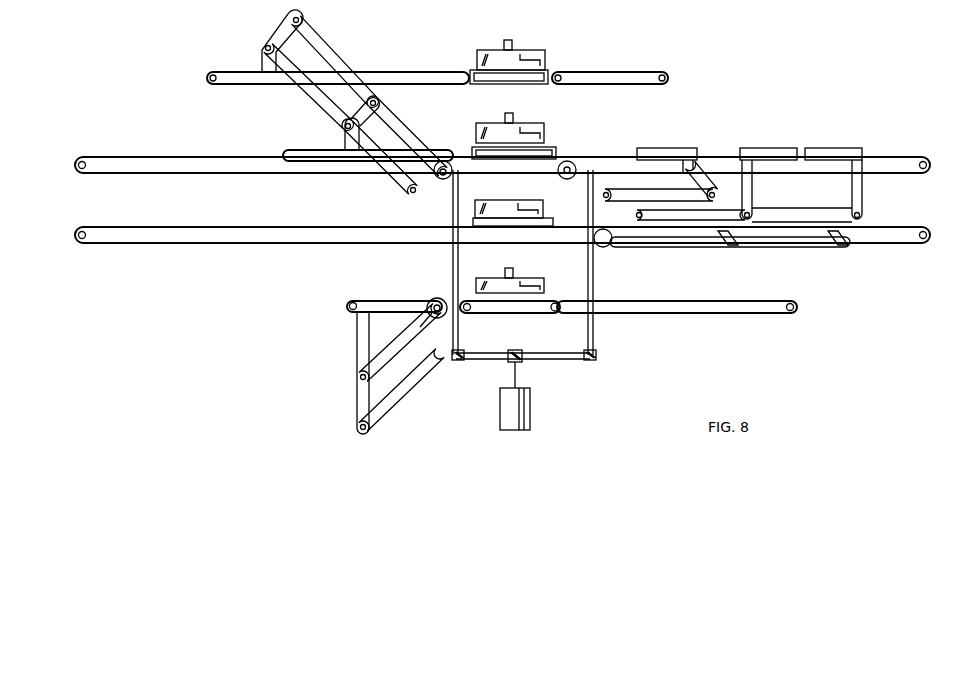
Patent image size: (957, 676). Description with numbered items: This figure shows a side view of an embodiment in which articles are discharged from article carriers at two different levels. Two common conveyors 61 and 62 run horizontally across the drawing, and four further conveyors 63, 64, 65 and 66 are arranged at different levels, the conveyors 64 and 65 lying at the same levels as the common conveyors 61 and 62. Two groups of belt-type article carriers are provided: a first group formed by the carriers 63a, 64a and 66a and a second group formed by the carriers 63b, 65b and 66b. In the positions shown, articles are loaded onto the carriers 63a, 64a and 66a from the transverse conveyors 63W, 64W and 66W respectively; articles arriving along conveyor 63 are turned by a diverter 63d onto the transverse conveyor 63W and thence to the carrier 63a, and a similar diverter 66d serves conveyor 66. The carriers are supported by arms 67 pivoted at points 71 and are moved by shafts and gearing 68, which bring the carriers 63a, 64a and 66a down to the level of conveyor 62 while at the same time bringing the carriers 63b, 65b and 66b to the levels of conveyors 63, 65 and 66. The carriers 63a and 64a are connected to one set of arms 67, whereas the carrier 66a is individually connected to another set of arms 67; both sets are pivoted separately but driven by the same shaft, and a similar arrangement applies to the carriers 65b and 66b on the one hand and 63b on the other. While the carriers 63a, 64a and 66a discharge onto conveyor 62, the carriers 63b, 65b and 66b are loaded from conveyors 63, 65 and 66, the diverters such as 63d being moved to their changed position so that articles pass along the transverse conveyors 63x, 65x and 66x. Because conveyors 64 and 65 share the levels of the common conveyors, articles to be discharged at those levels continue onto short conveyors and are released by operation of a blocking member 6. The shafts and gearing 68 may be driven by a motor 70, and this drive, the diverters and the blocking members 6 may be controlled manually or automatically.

The blocking member 6 is at (490, 124).
The common conveyor 61 is at (112, 159).
The common conveyor 62 is at (112, 230).
The conveyor 63 is at (472, 74).
The article carrier 63a is at (244, 82).
The article carrier 63b is at (658, 150).
The diverter 63d is at (482, 58).
The transverse conveyor 63W is at (388, 63).
The transverse conveyor 63x is at (616, 72).
The conveyor 64 is at (550, 150).
The article carrier 64a is at (314, 150).
The transverse conveyor 64W is at (452, 158).
The conveyor 65 is at (550, 224).
The article carrier 65b is at (758, 150).
The transverse conveyor 65x is at (744, 247).
The conveyor 66 is at (550, 304).
The article carrier 66a is at (376, 302).
The article carrier 66b is at (830, 150).
The diverter 66d is at (527, 283).
The transverse conveyor 66W is at (346, 305).
The transverse conveyor 66x is at (793, 302).
The arms 67 is at (308, 70).
The shafts and gearing 68 is at (460, 360).
The motor 70 is at (532, 419).
The pivot points 71 is at (446, 179).